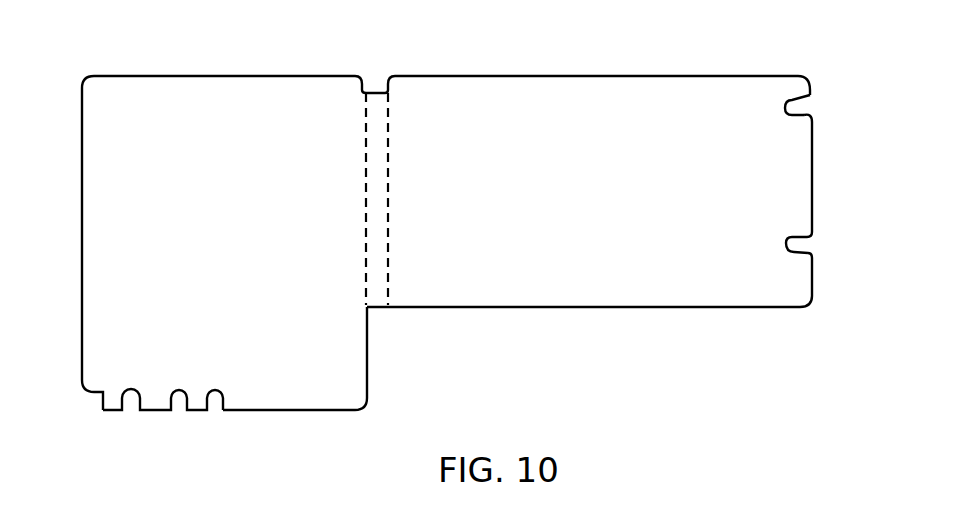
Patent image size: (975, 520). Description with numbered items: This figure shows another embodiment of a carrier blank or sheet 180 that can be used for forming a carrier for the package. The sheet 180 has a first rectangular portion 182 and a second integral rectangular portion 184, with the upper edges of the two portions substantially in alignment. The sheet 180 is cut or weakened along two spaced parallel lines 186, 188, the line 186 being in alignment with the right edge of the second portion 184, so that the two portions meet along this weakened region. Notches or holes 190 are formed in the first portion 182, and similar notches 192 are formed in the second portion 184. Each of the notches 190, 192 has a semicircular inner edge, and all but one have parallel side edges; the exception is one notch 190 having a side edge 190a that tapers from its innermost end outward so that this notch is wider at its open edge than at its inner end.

The carrier blank or sheet 180 is at (80, 75).
The first rectangular portion 182 is at (625, 236).
The second integral rectangular portion 184 is at (230, 303).
The cut or weakened line 186 is at (365, 163).
The cut or weakened line 188 is at (388, 205).
The notches or holes 190 is at (815, 115).
The tapered side edge 190a is at (802, 74).
The notches 192 is at (185, 395).